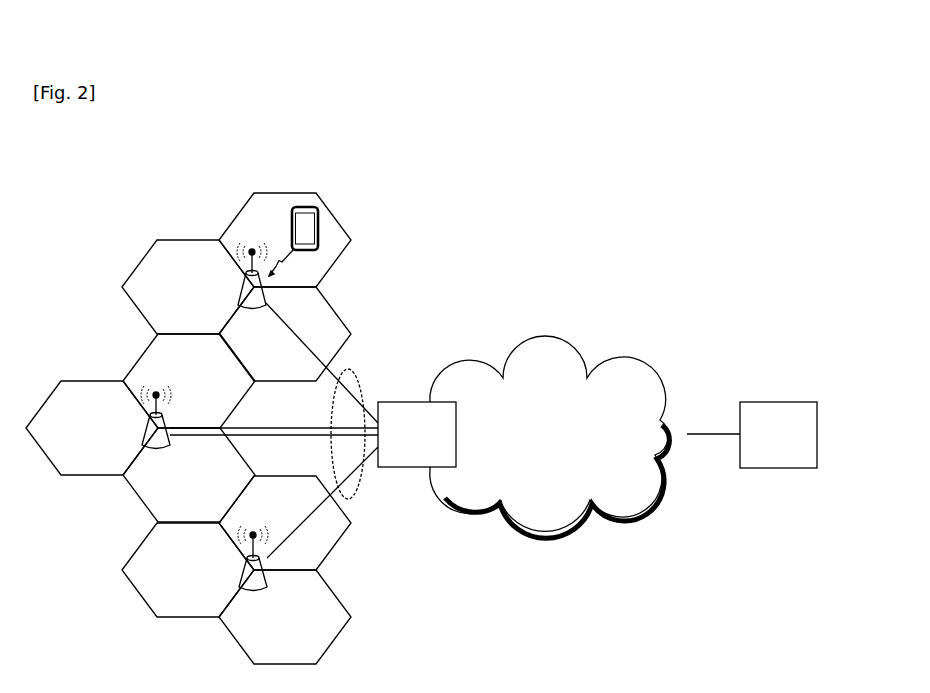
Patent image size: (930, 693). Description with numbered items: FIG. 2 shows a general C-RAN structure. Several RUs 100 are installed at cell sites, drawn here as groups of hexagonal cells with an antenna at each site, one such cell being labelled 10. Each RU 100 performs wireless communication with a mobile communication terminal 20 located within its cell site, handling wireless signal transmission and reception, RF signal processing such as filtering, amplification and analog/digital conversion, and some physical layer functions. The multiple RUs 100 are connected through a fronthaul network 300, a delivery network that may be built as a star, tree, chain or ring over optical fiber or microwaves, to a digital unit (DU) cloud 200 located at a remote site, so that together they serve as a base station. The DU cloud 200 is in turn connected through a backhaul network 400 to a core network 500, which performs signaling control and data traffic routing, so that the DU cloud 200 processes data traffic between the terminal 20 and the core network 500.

The cell 10 is at (283, 192).
The mobile communication terminal 20 is at (319, 229).
The RU 100 is at (245, 291).
The digital unit (DU) cloud 200 is at (397, 400).
The fronthaul network 300 is at (358, 493).
The backhaul network 400 is at (541, 346).
The core network 500 is at (777, 400).